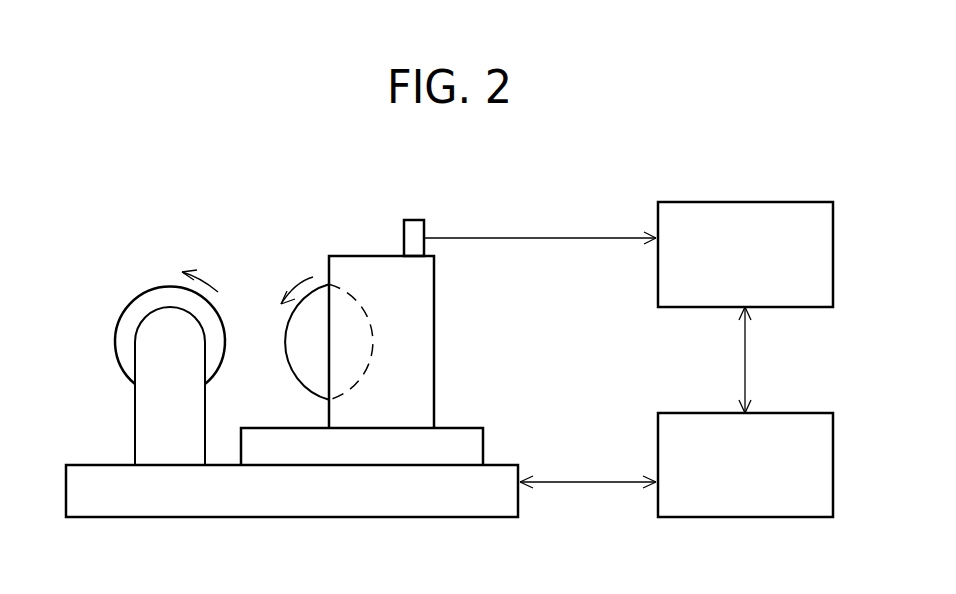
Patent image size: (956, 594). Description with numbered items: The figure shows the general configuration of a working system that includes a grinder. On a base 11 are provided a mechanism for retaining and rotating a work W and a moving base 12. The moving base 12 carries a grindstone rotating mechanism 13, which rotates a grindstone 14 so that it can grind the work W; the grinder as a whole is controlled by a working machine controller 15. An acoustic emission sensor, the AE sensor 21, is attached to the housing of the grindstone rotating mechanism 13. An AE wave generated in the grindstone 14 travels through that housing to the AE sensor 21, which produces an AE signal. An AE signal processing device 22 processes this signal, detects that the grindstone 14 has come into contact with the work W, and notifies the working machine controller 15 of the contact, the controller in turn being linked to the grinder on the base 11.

The base 11 is at (402, 517).
The moving base 12 is at (483, 446).
The grindstone rotating mechanism 13 is at (425, 395).
The grindstone 14 is at (303, 378).
The work W is at (142, 295).
The AE sensor 21 is at (404, 232).
The AE signal processing device 22 is at (722, 202).
The working machine controller 15 is at (750, 517).